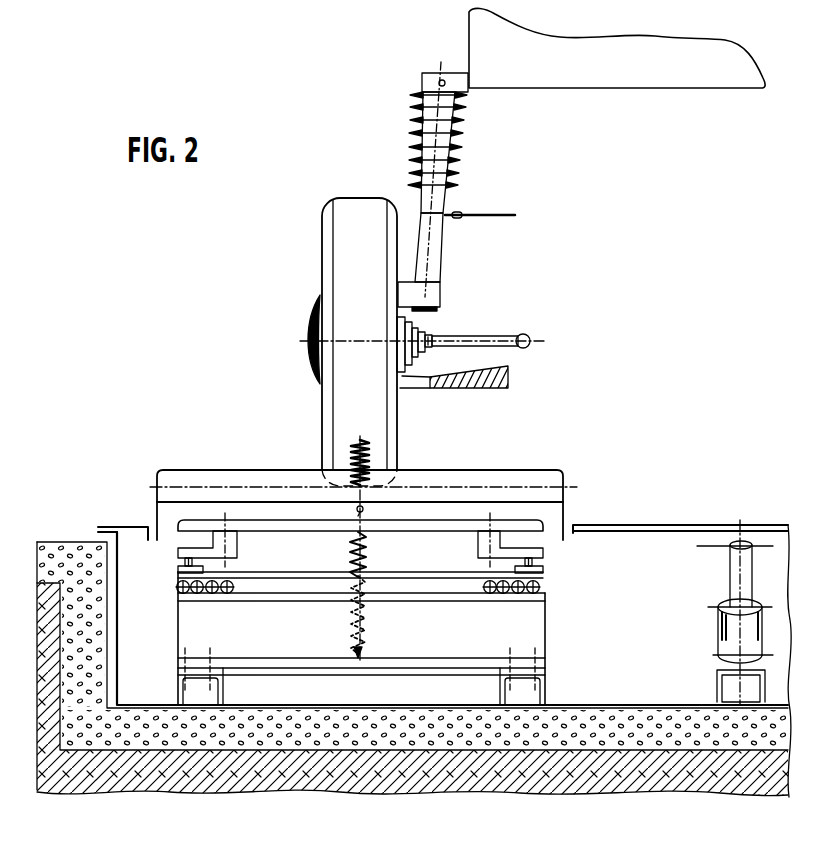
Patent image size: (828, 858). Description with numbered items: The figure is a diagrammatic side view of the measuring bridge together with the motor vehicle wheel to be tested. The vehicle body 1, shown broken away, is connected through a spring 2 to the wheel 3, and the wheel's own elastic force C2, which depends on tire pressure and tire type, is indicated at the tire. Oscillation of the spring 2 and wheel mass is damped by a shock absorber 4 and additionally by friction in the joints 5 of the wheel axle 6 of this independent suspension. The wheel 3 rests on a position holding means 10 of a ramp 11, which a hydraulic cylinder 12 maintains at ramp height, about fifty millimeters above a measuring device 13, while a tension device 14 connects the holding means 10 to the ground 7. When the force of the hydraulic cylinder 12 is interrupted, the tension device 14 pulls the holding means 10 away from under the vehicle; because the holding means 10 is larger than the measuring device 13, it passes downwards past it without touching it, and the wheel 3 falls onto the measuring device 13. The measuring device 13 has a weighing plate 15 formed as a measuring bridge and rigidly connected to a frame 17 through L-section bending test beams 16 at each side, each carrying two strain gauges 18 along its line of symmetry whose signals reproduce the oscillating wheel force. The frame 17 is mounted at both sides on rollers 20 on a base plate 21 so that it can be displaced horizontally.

The body 1 is at (483, 39).
The spring 2 is at (411, 99).
The wheel 3 is at (350, 203).
The shock absorber 4 is at (458, 160).
The joints 5 is at (532, 334).
The wheel axle 6 is at (492, 333).
The ground 7 is at (193, 706).
The position holding means 10 is at (270, 487).
The ramp 11 is at (232, 513).
The hydraulic cylinder 12 is at (740, 520).
The measuring device 13 is at (450, 548).
The tension device 14 is at (356, 632).
The weighing plate 15 is at (200, 527).
The bending test beams 16 is at (188, 548).
The frame 17 is at (177, 574).
The strain gauges 18 is at (517, 545).
The rollers 20 is at (545, 585).
The base plate 21 is at (545, 595).
The wheel's own elastic force C2 is at (372, 447).